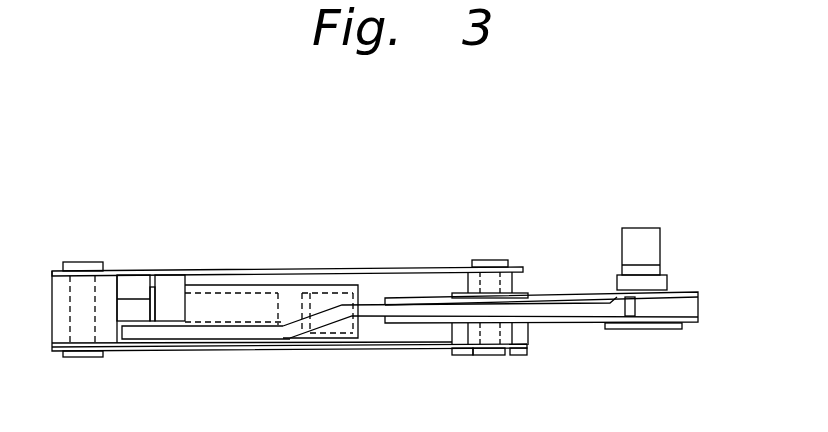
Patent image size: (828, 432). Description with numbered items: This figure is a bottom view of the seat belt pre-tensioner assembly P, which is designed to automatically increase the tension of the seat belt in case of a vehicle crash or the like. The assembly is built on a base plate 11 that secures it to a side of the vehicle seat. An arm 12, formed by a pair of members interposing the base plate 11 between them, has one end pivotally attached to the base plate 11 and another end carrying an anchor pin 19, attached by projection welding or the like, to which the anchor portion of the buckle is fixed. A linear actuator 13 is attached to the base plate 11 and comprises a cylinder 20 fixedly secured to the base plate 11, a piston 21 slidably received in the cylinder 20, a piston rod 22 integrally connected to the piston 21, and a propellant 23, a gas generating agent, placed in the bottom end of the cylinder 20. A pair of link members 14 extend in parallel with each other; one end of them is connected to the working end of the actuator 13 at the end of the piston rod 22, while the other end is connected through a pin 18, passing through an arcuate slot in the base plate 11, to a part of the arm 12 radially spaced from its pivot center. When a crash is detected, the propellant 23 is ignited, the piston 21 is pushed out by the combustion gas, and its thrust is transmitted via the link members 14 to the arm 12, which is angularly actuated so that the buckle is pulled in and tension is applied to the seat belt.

The pre-tensioner assembly P is at (487, 235).
The base plate 11 is at (373, 311).
The arm 12 is at (565, 323).
The linear actuator 13 is at (238, 320).
The link members 14 is at (162, 352).
The pin 18 is at (475, 328).
The anchor pin 19 is at (668, 283).
The cylinder 20 is at (225, 283).
The piston 21 is at (279, 293).
The piston rod 22 is at (128, 303).
The propellant 23 is at (322, 293).